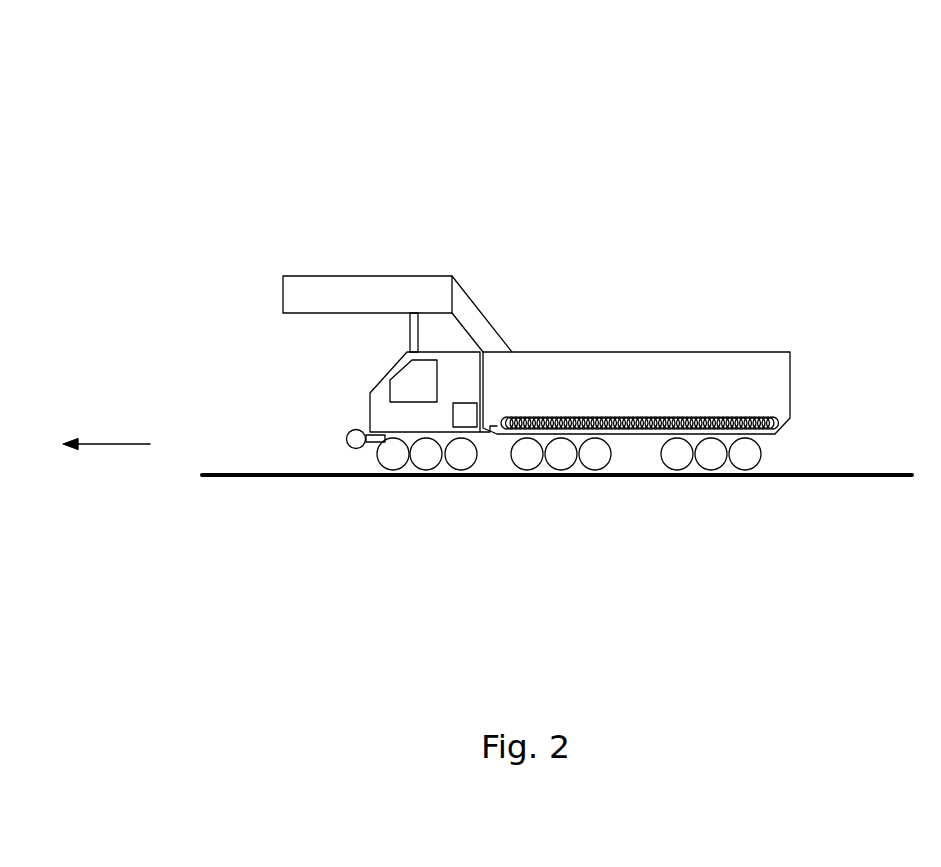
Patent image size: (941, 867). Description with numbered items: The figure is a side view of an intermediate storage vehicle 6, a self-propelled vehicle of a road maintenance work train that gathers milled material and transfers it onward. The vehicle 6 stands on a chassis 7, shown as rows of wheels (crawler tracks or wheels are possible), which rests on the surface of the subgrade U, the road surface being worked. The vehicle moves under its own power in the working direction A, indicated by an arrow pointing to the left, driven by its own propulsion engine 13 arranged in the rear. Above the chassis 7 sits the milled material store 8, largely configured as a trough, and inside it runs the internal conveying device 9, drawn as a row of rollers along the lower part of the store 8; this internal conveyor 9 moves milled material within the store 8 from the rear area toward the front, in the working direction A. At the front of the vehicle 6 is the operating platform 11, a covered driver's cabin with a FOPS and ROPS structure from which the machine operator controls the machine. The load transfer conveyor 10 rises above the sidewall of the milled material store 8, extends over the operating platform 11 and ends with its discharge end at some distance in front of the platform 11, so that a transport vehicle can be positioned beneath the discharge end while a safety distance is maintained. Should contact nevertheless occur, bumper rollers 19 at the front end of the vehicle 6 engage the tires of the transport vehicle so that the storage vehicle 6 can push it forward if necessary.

The intermediate storage vehicle 6 is at (590, 128).
The chassis 7 is at (430, 471).
The milled material store 8 is at (745, 351).
The internal conveying device 9 is at (608, 418).
The load transfer conveyor 10 is at (338, 275).
The operating platform 11 is at (422, 380).
The propulsion engine 13 is at (462, 415).
The bumper rollers 19 is at (356, 439).
The working direction A is at (116, 443).
The subgrade U is at (810, 477).